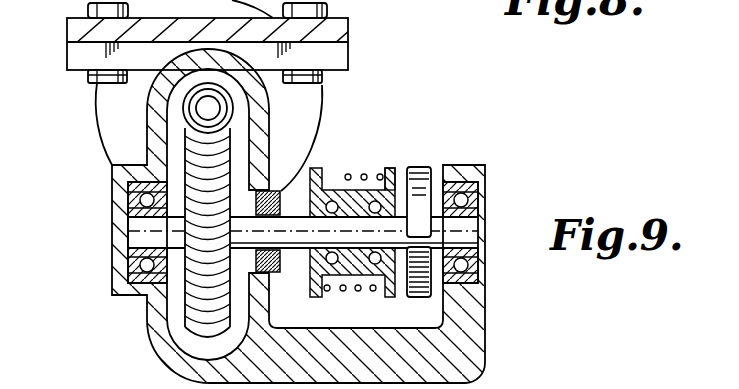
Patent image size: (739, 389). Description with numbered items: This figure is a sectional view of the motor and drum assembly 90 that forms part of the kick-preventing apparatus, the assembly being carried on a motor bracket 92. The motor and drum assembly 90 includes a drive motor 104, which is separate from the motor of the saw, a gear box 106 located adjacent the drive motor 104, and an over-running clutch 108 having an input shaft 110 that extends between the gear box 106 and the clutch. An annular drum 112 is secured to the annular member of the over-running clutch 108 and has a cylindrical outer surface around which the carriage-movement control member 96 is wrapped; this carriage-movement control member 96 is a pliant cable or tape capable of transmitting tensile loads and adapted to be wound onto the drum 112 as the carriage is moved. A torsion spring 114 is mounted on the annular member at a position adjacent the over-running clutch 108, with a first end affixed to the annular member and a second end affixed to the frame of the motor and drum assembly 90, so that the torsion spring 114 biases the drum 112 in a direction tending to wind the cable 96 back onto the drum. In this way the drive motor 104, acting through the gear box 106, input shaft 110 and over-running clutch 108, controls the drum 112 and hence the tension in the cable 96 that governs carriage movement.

The motor and drum assembly 90 is at (91, 77).
The motor bracket 92 is at (348, 32).
The carriage-movement control member 96 is at (365, 172).
The drive motor 104 is at (100, 122).
The gear box 106 is at (149, 335).
The over-running clutch 108 is at (318, 268).
The input shaft 110 is at (291, 232).
The annular drum 112 is at (393, 170).
The torsion spring 114 is at (430, 168).